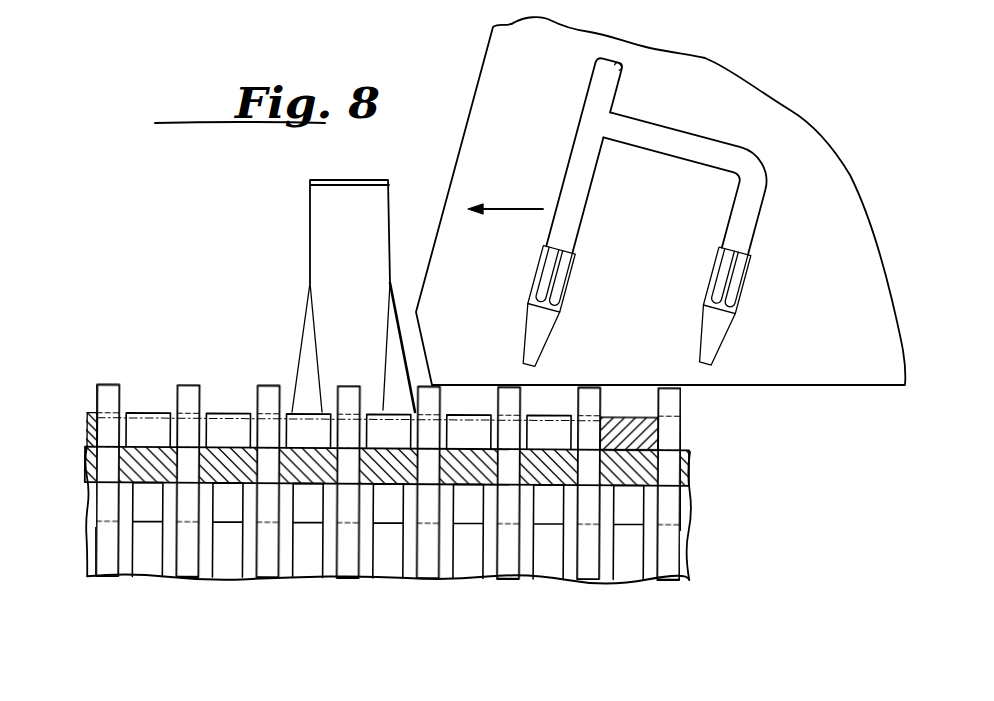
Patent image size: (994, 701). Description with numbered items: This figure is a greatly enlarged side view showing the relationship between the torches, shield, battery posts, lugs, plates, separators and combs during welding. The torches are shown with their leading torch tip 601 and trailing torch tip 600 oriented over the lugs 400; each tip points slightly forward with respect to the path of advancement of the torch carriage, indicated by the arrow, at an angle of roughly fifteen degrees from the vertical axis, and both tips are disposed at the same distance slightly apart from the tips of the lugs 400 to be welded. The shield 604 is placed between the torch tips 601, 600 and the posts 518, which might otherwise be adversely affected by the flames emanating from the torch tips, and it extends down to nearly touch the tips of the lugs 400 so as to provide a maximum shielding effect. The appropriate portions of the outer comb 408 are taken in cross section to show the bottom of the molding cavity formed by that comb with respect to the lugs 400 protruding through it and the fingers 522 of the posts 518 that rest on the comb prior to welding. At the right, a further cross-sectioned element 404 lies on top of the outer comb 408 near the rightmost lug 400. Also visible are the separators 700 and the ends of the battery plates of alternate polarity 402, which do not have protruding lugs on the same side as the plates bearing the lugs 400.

The lugs 400 is at (185, 390).
The battery plates of alternate polarity 402 is at (462, 556).
The hatched end block 404 is at (627, 427).
The outer comb 408 is at (228, 470).
The posts 518 is at (337, 258).
The fingers 522 is at (303, 417).
The trailing torch tip 600 is at (713, 335).
The leading torch tip 601 is at (527, 333).
The shield 604 is at (710, 100).
The separators 700 is at (210, 568).